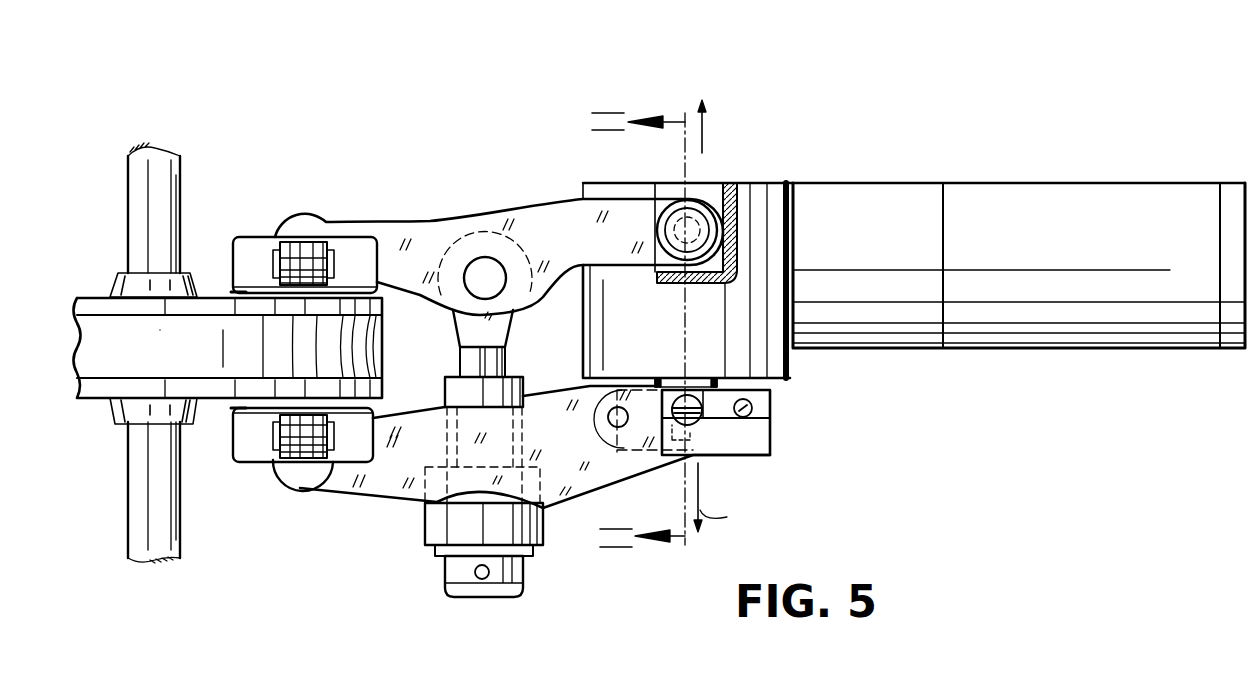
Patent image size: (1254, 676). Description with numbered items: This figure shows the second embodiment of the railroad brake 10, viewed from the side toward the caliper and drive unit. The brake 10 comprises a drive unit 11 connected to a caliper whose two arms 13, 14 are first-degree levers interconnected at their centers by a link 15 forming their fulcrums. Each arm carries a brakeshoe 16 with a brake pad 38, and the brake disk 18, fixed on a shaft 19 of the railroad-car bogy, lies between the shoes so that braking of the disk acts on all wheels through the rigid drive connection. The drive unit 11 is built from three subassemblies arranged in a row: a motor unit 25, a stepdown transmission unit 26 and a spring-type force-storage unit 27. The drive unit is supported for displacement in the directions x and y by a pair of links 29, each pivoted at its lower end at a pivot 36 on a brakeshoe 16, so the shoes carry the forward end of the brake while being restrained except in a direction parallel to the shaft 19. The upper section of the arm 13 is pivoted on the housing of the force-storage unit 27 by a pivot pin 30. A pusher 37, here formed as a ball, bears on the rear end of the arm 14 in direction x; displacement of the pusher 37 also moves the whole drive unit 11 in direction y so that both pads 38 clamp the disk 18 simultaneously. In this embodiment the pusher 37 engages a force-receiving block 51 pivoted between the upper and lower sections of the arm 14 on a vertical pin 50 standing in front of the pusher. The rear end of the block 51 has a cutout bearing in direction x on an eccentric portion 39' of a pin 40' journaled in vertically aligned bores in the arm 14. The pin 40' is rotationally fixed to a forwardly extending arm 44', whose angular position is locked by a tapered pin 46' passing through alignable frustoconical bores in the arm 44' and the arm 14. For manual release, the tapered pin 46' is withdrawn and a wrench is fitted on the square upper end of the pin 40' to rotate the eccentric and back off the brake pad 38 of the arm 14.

The brake 10 is at (520, 128).
The drive unit 11 is at (1005, 172).
The arm 13 is at (448, 220).
The arm 14 is at (395, 500).
The link 15 is at (460, 350).
The brakeshoe 16 is at (257, 253).
The brake disk 18 is at (128, 342).
The shaft 19 is at (158, 218).
The motor unit 25 is at (1181, 170).
The stepdown transmission unit 26 is at (874, 178).
The spring-type force-storage unit 27 is at (763, 180).
The link 29 is at (307, 253).
The pivot pin 30 is at (697, 220).
The pivot 36 is at (327, 241).
The pusher 37 is at (687, 388).
The brake pad 38 is at (233, 293).
The eccentric portion 39' is at (785, 427).
The pin 40' is at (780, 404).
The arm 44' is at (722, 446).
The tapered pin 46' is at (703, 444).
The pin 50 is at (607, 418).
The force-receiving block 51 is at (725, 427).